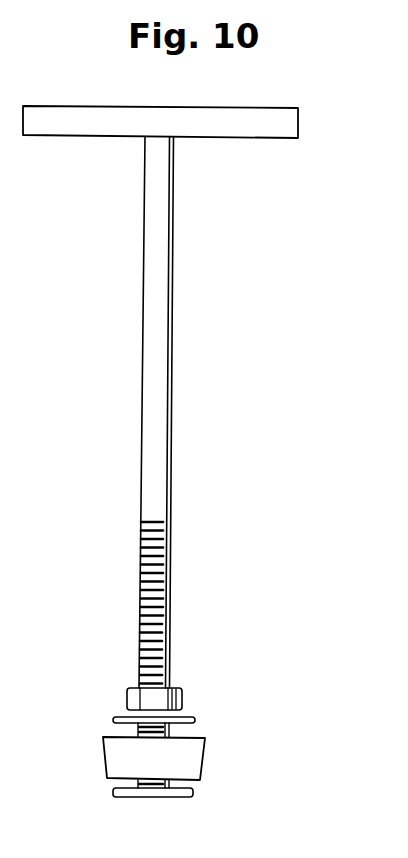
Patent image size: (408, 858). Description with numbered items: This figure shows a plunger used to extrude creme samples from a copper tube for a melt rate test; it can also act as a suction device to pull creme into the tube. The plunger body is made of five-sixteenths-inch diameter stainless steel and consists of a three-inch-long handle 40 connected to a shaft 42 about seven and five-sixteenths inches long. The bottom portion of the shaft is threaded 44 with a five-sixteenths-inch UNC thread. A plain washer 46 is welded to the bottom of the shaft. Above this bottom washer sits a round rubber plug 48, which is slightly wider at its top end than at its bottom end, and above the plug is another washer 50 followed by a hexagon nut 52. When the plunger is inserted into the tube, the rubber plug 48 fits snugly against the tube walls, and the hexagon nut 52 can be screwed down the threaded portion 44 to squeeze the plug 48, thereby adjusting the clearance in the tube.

The handle 40 is at (299, 123).
The shaft 42 is at (173, 285).
The threaded portion 44 is at (168, 608).
The hexagon nut 52 is at (182, 693).
The washer 50 is at (195, 719).
The round rubber plug 48 is at (205, 748).
The plain washer 46 is at (193, 790).